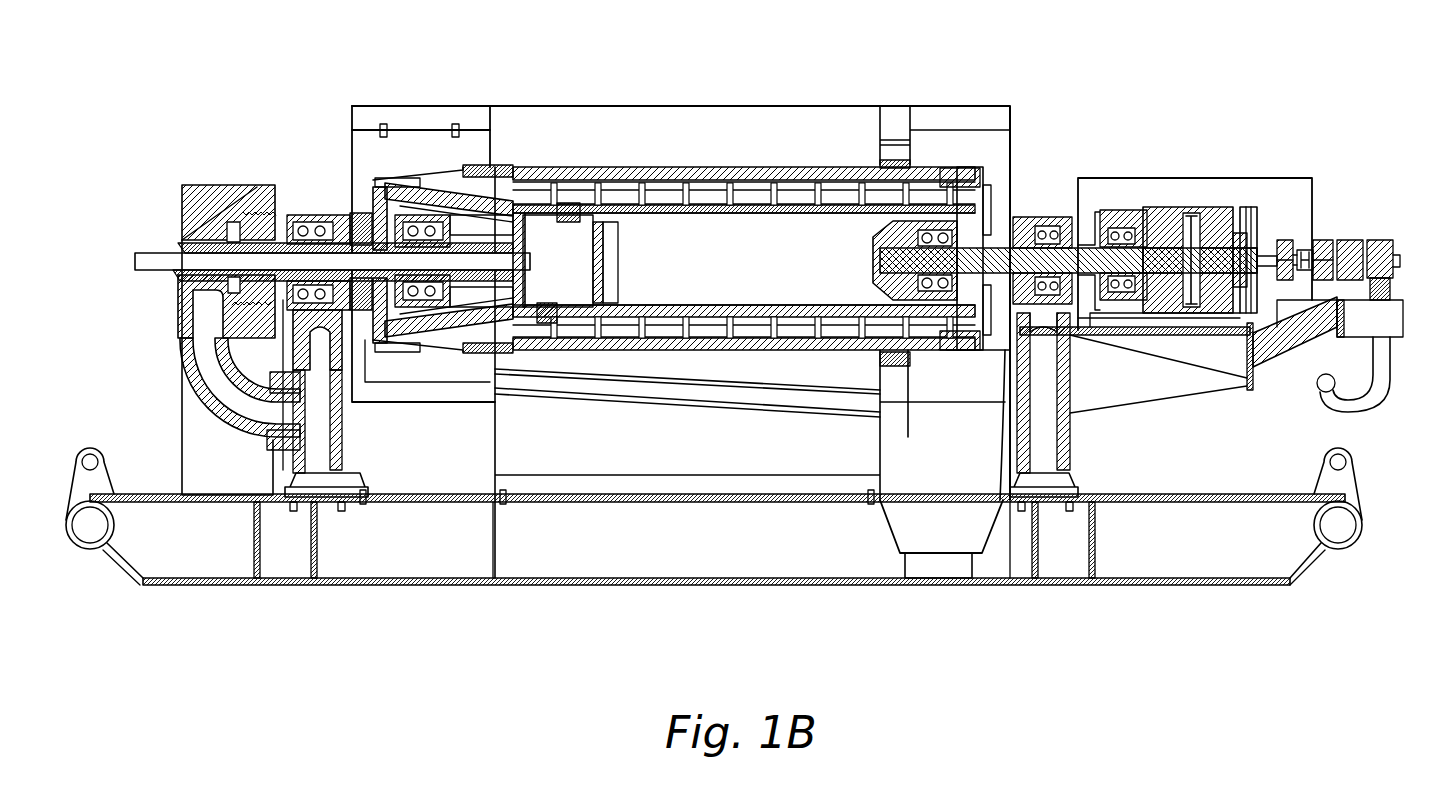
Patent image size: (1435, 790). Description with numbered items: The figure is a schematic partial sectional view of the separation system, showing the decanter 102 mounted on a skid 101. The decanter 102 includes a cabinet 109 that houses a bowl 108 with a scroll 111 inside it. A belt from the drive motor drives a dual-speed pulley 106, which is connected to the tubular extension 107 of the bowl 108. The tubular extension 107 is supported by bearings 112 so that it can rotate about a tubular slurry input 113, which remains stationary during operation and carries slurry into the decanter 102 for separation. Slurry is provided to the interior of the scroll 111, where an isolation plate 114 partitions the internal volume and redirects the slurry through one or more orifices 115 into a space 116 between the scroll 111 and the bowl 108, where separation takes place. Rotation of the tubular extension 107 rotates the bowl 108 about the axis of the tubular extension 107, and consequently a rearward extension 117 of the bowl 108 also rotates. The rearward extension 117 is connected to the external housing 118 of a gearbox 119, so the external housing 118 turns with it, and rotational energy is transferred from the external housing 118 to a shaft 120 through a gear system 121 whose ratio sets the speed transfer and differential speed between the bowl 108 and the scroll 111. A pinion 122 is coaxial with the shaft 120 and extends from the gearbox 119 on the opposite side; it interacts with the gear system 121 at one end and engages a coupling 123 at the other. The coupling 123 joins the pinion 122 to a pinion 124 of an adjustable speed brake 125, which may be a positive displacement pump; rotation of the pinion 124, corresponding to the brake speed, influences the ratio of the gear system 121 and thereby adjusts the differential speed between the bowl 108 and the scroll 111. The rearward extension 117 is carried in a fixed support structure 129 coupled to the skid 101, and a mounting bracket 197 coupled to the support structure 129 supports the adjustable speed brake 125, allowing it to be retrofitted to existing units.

The skid 101 is at (1157, 585).
The decanter 102 is at (745, 66).
The dual-speed pulley 106 is at (260, 203).
The tubular extension 107 is at (342, 213).
The bowl 108 is at (551, 177).
The cabinet 109 is at (652, 104).
The scroll 111 is at (533, 165).
The bearings 112 is at (320, 212).
The tubular slurry input 113 is at (150, 251).
The isolation plate 114 is at (622, 236).
The orifices 115 is at (573, 205).
The space 116 is at (437, 180).
The rearward extension 117 is at (982, 178).
The external housing 118 is at (1100, 210).
The gearbox 119 is at (1202, 187).
The shaft 120 is at (1042, 246).
The gear system 121 is at (1167, 243).
The pinion 122 is at (1263, 237).
The coupling 123 is at (1287, 243).
The pinion 124 is at (1350, 243).
The adjustable speed brake 125 is at (1396, 218).
The fixed support structure 129 is at (1067, 337).
The mounting bracket 197 is at (1280, 365).